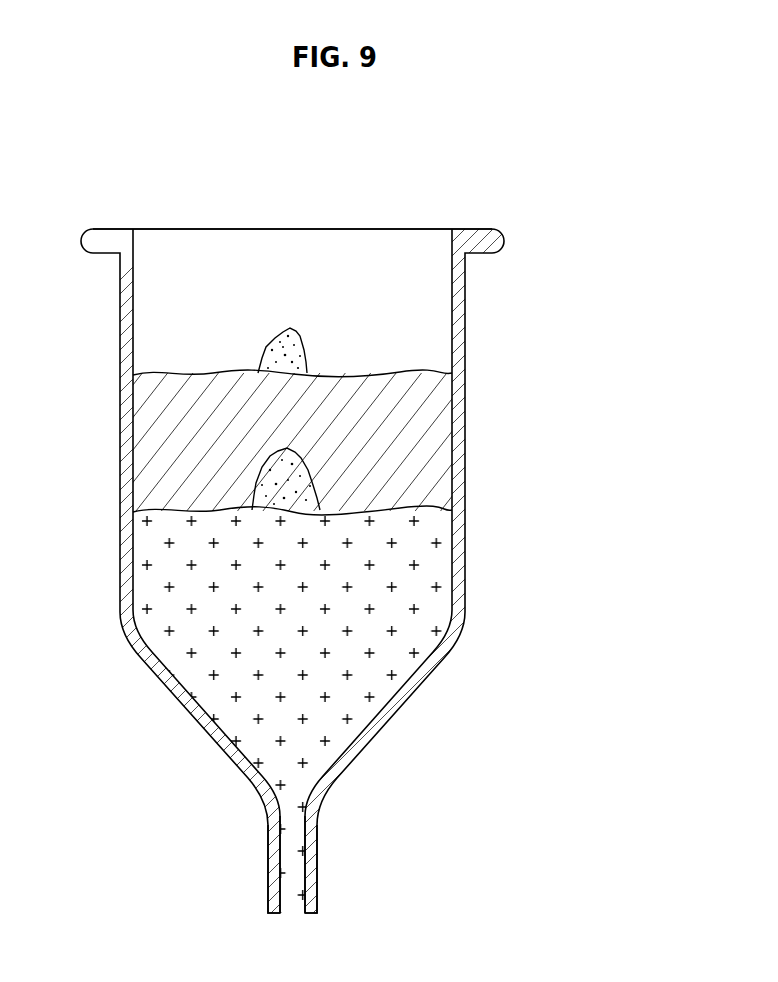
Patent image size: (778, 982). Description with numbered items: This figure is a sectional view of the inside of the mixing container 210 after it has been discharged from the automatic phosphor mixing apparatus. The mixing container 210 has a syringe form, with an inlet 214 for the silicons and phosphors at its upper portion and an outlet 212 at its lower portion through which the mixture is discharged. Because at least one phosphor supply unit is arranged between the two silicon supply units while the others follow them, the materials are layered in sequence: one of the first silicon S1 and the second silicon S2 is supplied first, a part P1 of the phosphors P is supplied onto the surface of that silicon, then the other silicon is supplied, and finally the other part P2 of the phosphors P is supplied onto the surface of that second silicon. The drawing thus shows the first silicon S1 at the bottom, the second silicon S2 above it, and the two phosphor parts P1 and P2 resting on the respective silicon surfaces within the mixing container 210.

The mixing container 210 is at (467, 324).
The inlet 214 is at (294, 228).
The outlet 212 is at (318, 869).
The second silicon S2 is at (408, 450).
The first silicon S1 is at (408, 575).
The phosphors P is at (171, 414).
The part of the phosphors P1 is at (273, 462).
The other part of the phosphors P2 is at (280, 352).